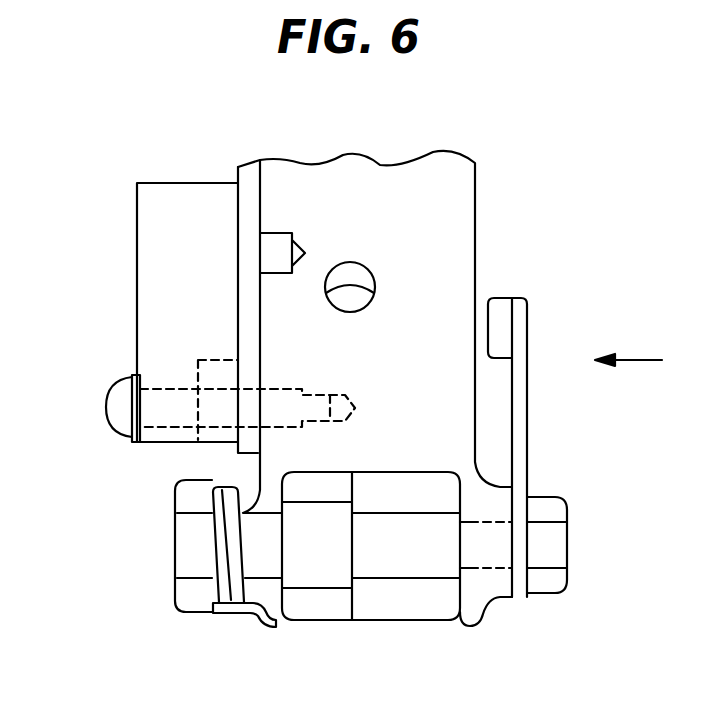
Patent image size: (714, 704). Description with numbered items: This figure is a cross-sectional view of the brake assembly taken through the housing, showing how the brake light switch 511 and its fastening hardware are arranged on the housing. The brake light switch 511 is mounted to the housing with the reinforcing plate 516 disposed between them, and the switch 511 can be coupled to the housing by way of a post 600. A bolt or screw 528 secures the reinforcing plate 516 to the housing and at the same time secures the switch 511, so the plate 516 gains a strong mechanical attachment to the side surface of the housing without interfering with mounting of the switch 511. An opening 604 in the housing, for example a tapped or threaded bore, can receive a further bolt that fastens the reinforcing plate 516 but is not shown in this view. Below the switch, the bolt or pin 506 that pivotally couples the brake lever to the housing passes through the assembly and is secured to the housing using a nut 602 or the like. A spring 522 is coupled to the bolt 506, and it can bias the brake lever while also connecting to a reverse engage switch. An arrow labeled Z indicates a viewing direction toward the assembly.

The brake light switch 511 is at (190, 198).
The reinforcing plate 516 is at (245, 163).
The post 600 is at (297, 233).
The opening 604 is at (368, 267).
The bolt or screw 528 is at (108, 412).
The bolt or pin 506 is at (173, 550).
The spring 522 is at (222, 615).
The nut 602 is at (568, 595).
The view direction arrow Z is at (631, 358).